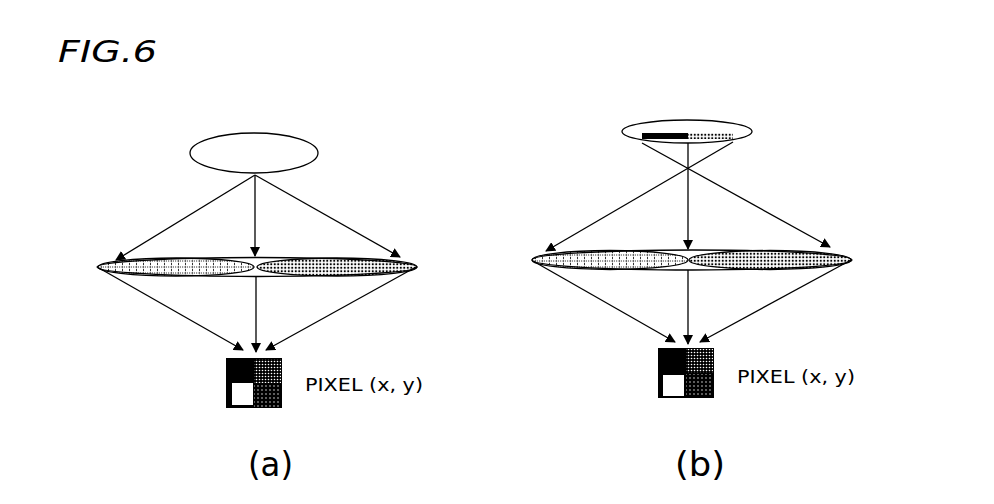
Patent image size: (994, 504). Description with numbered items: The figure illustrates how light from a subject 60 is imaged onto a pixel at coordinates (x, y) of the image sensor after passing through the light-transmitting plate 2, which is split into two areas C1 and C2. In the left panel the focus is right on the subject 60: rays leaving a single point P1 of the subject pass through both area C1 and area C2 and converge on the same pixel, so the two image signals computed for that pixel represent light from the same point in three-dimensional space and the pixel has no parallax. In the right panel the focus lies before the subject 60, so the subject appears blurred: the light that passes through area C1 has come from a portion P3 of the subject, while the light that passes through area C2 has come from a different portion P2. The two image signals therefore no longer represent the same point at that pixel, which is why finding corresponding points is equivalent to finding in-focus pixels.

The subject 60 is at (430, 134).
The light-transmitting plate 2 is at (436, 251).
The area C1 is at (393, 251).
The area C2 is at (554, 251).
The point P1 is at (255, 154).
The portion P2 is at (663, 117).
The portion P3 is at (710, 117).